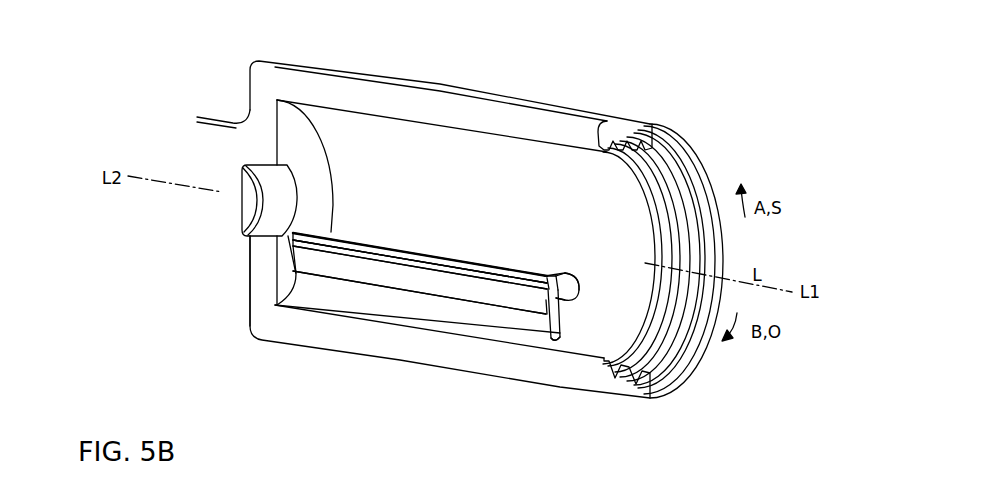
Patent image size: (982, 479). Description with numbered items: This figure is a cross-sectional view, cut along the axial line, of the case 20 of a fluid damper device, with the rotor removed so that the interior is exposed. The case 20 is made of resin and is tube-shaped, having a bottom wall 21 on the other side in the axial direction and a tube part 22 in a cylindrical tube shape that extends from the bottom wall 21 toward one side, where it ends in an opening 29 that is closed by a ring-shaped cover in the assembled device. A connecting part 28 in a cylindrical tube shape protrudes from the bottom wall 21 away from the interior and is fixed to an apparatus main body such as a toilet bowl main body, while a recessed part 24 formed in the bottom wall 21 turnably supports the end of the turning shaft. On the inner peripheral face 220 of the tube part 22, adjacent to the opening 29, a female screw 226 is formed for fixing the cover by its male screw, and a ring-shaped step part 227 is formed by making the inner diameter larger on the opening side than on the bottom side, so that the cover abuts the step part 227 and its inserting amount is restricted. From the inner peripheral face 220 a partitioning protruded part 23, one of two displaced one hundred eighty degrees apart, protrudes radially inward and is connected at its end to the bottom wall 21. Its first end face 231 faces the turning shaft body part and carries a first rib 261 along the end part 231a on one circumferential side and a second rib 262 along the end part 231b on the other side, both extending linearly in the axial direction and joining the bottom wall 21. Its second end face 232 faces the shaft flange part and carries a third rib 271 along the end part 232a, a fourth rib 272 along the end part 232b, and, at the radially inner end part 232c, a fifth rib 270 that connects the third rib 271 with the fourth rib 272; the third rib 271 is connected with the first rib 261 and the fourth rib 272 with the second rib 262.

The case 20 is at (555, 103).
The bottom wall 21 is at (283, 128).
The tube part 22 is at (428, 86).
The inner peripheral face 220 is at (481, 150).
The step part 227 is at (600, 120).
The opening 29 is at (680, 152).
The female screw 226 is at (681, 341).
The recessed part 24 is at (253, 233).
The connecting part 28 is at (236, 262).
The partitioning protruded part 23 is at (493, 298).
The first end face 231 is at (401, 258).
The end part on one side in the circumferential direction of the first end face 231a is at (351, 258).
The end part on the other side in the circumferential direction of the first end fac 231b is at (347, 243).
The first rib 261 is at (418, 272).
The second rib 262 is at (446, 254).
The second end face 232 is at (565, 304).
The end part on one side in the circumferential direction of the second end face 232a is at (543, 302).
The end part on the other side in the circumferential direction of the second end fa 232b is at (572, 283).
The end part on an inner side in the radial direction of the second end face 232c is at (547, 277).
The fifth rib 270 is at (561, 308).
The third rib 271 is at (538, 330).
The fourth rib 272 is at (565, 276).